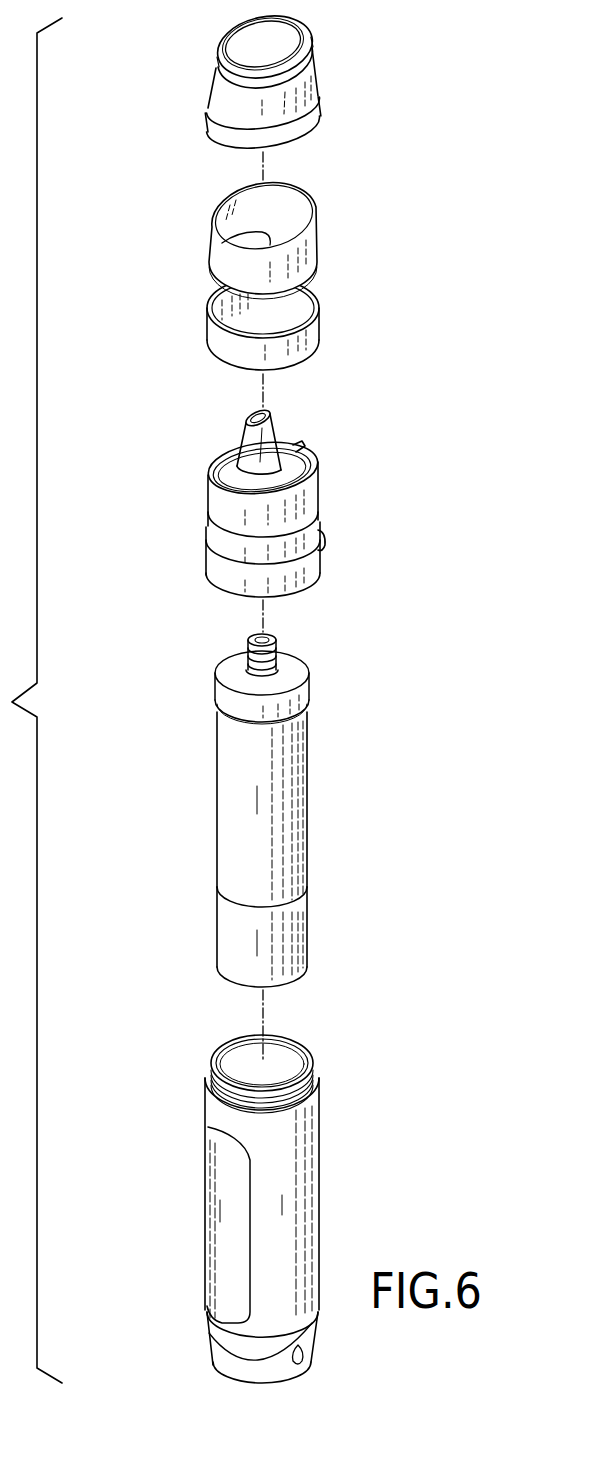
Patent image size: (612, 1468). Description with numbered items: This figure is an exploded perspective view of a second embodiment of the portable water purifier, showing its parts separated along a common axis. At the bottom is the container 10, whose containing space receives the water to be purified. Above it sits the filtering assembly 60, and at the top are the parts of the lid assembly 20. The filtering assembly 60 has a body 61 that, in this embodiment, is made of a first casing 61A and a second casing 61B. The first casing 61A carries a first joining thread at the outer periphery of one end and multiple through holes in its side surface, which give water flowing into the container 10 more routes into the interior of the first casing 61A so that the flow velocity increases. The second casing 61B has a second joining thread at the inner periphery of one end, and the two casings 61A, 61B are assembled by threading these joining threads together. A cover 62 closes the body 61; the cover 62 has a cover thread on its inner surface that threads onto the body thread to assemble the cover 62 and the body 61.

The container 10 is at (172, 1215).
The lid assembly 20 is at (172, 229).
The filtering assembly 60 is at (185, 633).
The body 61 is at (376, 850).
The first casing 61A is at (316, 939).
The second casing 61B is at (312, 775).
The cover 62 is at (292, 672).